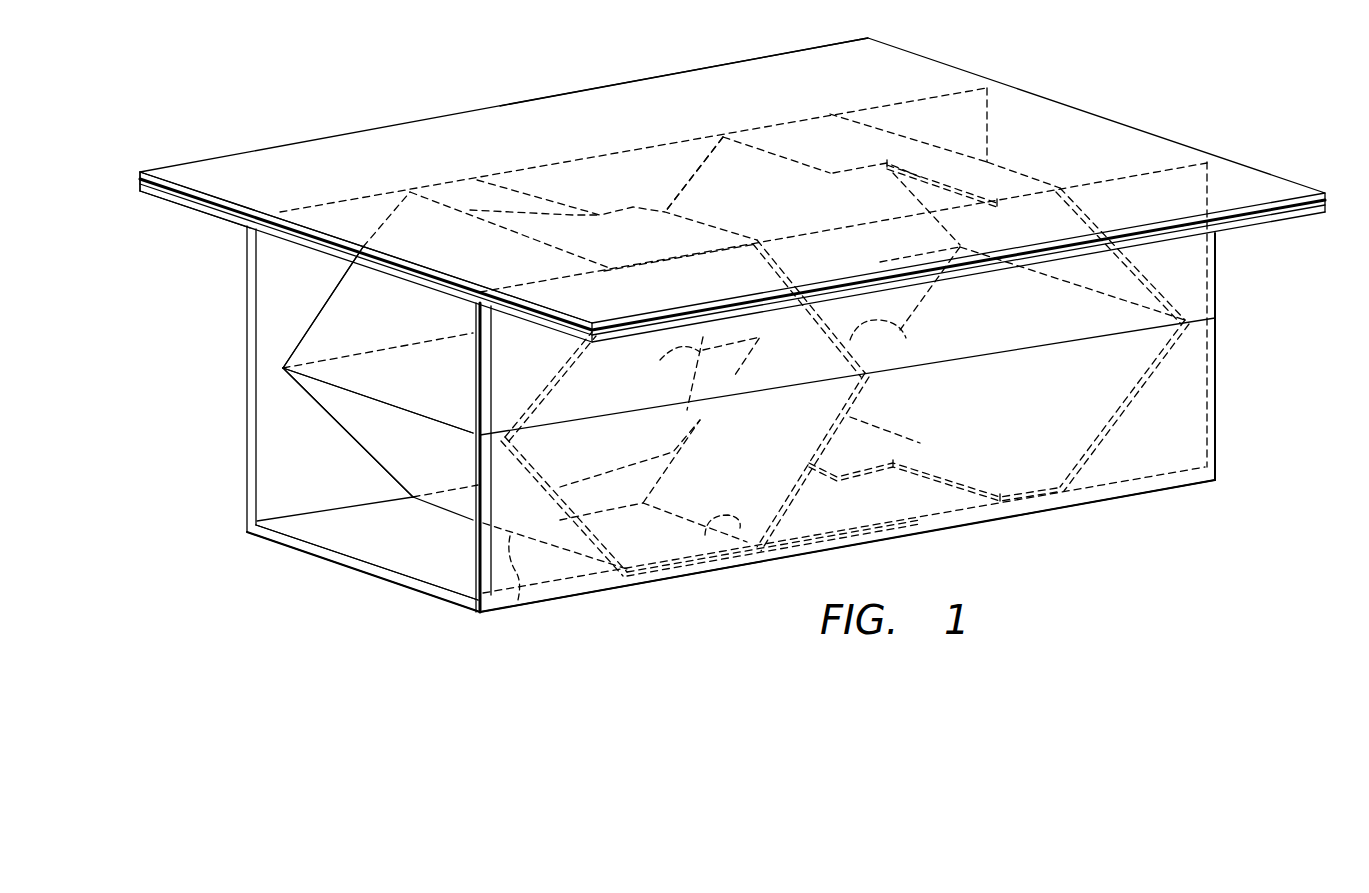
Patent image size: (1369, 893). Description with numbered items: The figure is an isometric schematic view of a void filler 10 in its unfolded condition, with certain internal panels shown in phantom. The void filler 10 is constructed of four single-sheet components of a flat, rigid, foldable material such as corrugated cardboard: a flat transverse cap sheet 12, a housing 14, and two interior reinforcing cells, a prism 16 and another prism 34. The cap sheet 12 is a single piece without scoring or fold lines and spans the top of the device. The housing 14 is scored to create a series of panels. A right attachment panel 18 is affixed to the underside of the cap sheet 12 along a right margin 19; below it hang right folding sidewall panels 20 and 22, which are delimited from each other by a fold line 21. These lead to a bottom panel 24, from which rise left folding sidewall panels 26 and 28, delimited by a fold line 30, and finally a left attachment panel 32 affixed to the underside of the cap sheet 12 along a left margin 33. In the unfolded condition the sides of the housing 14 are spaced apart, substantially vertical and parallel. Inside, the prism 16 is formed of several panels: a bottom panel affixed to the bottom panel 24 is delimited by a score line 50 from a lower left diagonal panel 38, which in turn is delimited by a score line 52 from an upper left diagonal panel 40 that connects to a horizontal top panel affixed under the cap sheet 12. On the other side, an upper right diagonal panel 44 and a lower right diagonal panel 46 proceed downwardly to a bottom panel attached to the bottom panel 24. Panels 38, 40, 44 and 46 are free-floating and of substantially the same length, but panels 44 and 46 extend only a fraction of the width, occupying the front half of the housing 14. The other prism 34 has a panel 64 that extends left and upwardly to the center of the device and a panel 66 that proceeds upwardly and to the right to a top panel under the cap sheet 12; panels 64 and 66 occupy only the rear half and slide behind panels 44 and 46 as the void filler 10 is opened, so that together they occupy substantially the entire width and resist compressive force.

The void filler 10 is at (412, 88).
The cap sheet 12 is at (578, 149).
The housing 14 is at (613, 608).
The prism 16 is at (360, 420).
The right attachment panel 18 is at (1278, 216).
The right margin 19 is at (1312, 202).
The right folding sidewall panel 20 is at (1203, 274).
The fold line 21 is at (1212, 322).
The right folding sidewall panel 22 is at (1203, 386).
The bottom panel 24 is at (420, 550).
The left folding sidewall panel 26 is at (276, 490).
The left folding sidewall panel 28 is at (276, 322).
The fold line 30 is at (276, 374).
The left attachment panel 32 is at (188, 210).
The left margin 33 is at (740, 64).
The prism 34 is at (1066, 520).
The lower left diagonal panel 38 is at (402, 446).
The upper left diagonal panel 40 is at (324, 318).
The upper right diagonal panel 44 is at (906, 338).
The lower right diagonal panel 46 is at (707, 538).
The score line 50 is at (518, 600).
The score line 52 is at (318, 380).
The panel 64 is at (672, 370).
The panel 66 is at (698, 186).